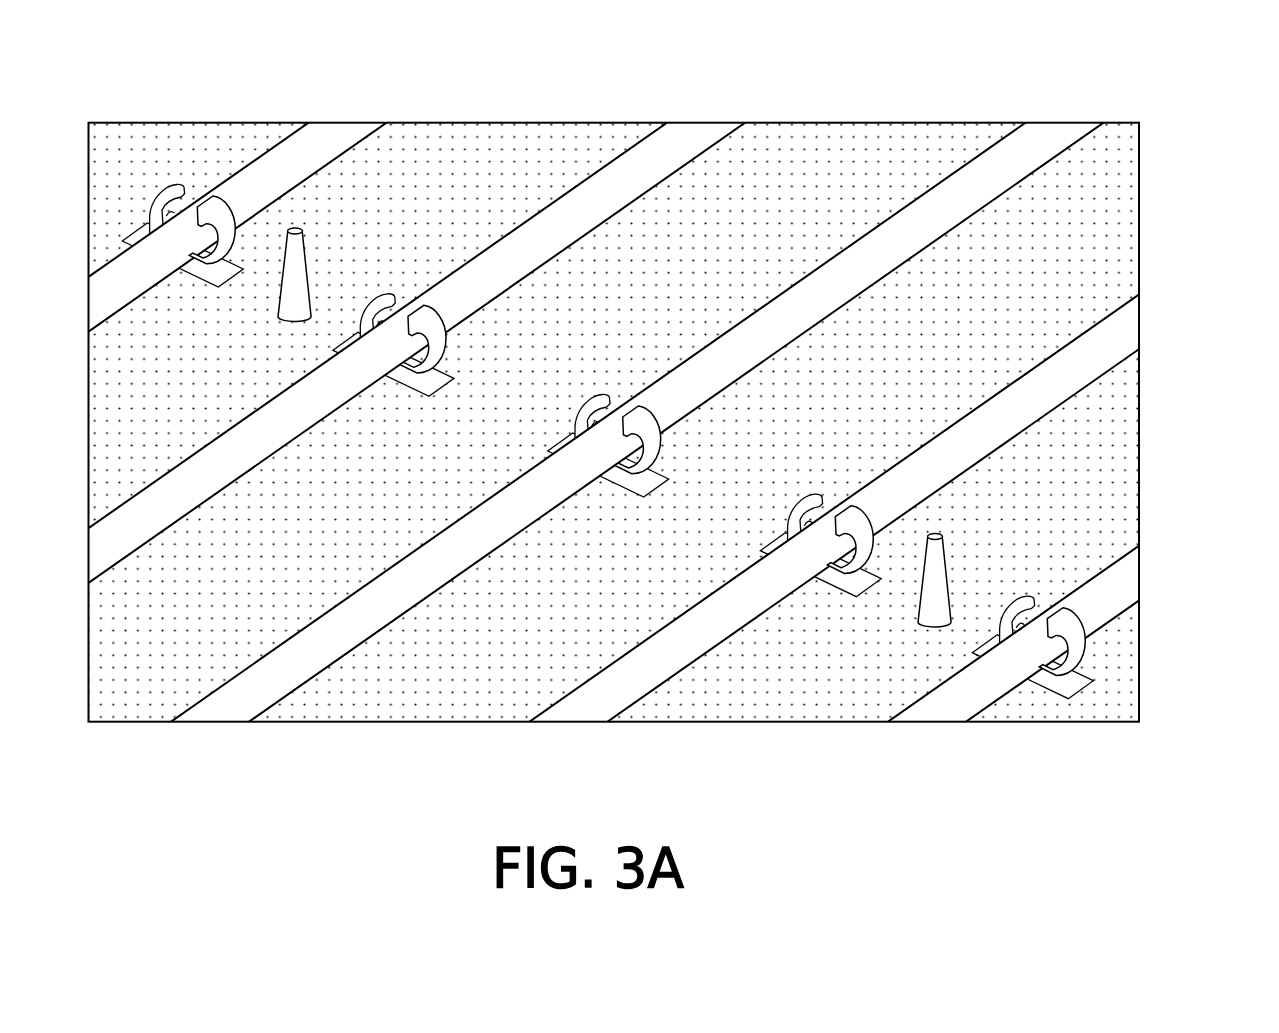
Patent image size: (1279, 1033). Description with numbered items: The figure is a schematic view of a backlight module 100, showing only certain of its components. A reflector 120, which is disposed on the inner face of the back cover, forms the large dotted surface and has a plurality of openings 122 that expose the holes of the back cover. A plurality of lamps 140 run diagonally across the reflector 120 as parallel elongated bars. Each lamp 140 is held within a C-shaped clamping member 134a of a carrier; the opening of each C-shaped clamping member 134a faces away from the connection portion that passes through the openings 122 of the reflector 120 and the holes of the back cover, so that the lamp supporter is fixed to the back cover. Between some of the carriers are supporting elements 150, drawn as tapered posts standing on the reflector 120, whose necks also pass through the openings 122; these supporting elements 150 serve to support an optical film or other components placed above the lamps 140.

The backlight module 100 is at (1243, 648).
The reflector 120 is at (848, 150).
The openings 122 is at (668, 482).
The C-shaped clamping member 134a is at (643, 424).
The lamps 140 is at (1130, 332).
The supporting elements 150 is at (937, 568).